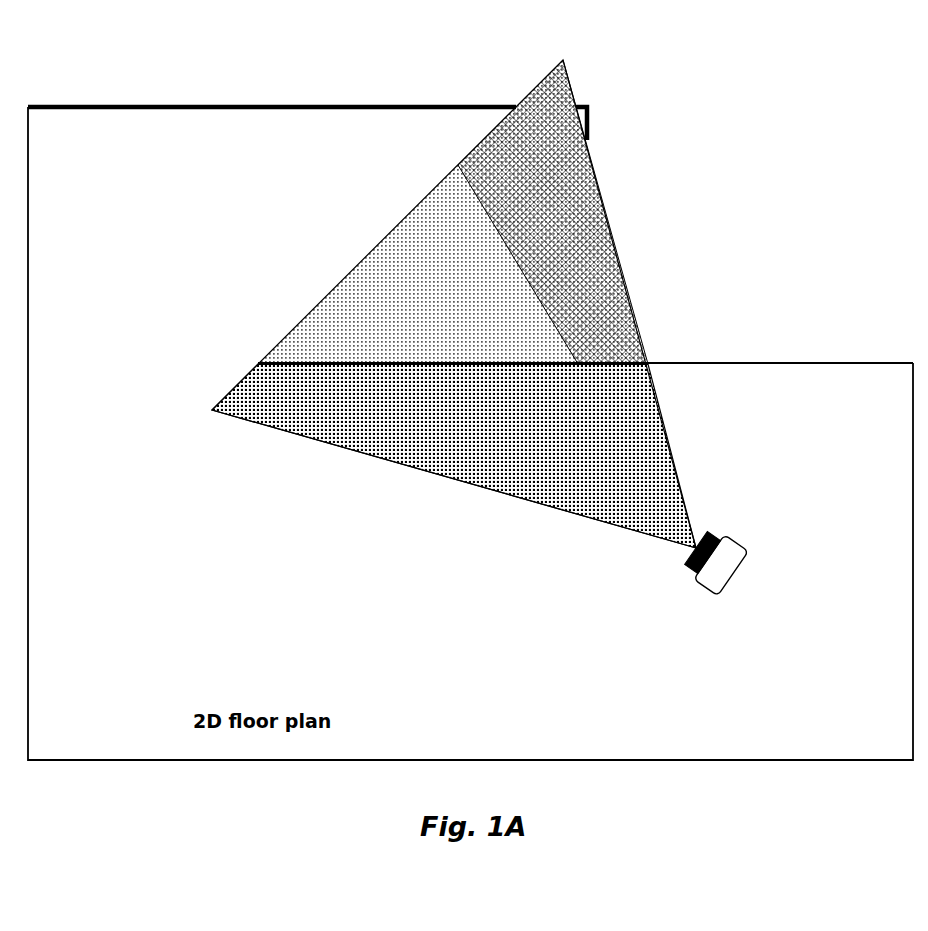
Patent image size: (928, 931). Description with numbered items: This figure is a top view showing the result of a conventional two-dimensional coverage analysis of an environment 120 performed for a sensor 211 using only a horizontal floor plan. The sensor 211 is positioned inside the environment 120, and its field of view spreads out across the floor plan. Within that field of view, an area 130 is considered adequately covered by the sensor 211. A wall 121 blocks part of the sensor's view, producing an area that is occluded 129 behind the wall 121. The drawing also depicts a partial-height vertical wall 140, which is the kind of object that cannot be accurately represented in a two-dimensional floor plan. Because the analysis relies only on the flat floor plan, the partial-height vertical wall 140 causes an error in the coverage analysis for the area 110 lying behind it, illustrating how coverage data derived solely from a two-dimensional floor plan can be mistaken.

The area behind the partial-height wall 110 is at (386, 311).
The environment 120 is at (822, 428).
The wall 121 is at (845, 361).
The occluded area 129 is at (530, 173).
The adequately covered area 130 is at (576, 435).
The partial-height vertical wall 140 is at (360, 369).
The sensor 211 is at (723, 633).